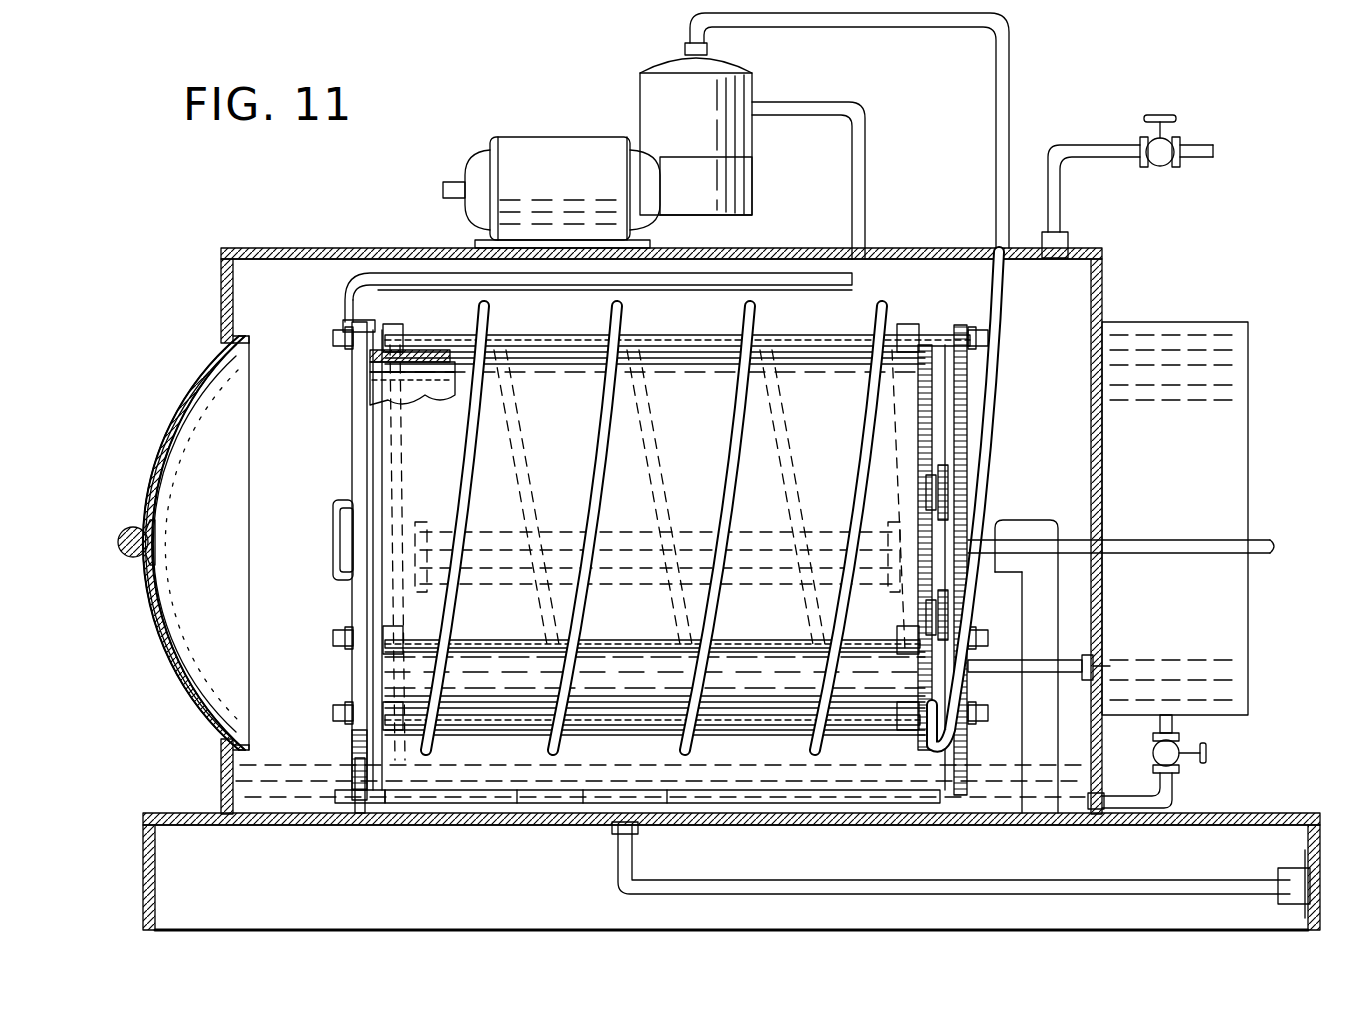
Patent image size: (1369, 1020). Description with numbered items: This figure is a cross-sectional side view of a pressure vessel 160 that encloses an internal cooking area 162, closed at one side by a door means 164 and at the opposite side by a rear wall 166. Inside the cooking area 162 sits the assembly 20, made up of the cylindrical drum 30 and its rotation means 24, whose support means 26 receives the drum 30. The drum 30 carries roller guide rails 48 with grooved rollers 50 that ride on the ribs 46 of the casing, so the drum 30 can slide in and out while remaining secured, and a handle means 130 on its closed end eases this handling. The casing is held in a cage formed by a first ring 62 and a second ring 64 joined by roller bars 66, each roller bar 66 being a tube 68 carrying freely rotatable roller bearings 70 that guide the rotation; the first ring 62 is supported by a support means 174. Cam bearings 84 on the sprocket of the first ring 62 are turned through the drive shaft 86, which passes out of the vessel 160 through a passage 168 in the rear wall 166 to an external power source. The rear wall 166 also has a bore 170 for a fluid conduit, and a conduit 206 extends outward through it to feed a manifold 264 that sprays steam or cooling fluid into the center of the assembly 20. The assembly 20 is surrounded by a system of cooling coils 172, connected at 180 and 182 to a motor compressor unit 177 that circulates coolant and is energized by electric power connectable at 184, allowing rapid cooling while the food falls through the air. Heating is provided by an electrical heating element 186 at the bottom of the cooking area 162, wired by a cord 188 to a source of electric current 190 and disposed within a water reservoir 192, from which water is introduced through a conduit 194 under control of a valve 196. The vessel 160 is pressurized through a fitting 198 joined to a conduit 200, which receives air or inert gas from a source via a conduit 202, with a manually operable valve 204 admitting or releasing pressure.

The assembly 20 is at (677, 468).
The rotation means 24 is at (684, 336).
The support means 26 is at (938, 326).
The cylindrical drum 30 is at (400, 405).
The ribs 46 is at (440, 350).
The roller guide rails 48 is at (412, 380).
The rollers 50 is at (395, 370).
The first ring 62 is at (965, 380).
The second ring 64 is at (358, 610).
The roller bars 66 is at (405, 340).
The tube 68 is at (447, 350).
The roller bearings 70 is at (390, 326).
The cam bearings 84 is at (935, 486).
The drive shaft 86 is at (1110, 666).
The handle means 130 is at (340, 548).
The pressure vessel 160 is at (214, 250).
The internal cooking area 162 is at (420, 482).
The door means 164 is at (200, 395).
The rear wall 166 is at (1102, 298).
The passage 168 is at (1092, 660).
The bore 170 is at (1102, 810).
The coils 172 is at (420, 742).
The support means 174 is at (365, 780).
The motor compressor unit 177 is at (770, 136).
The coil connection 180 is at (722, 62).
The coil connection 182 is at (760, 104).
The electric power connection 184 is at (455, 172).
The electrical heating element 186 is at (520, 803).
The cord 188 is at (880, 884).
The source of electric current 190 is at (1292, 888).
The water reservoir 192 is at (1248, 362).
The conduit 194 is at (1175, 792).
The valve 196 is at (1178, 750).
The fitting 198 is at (1068, 243).
The conduit 200 is at (1053, 142).
The conduit 202 is at (1216, 151).
The manually operable valve 204 is at (1170, 137).
The conduit 206 is at (1228, 538).
The manifold 264 is at (682, 530).